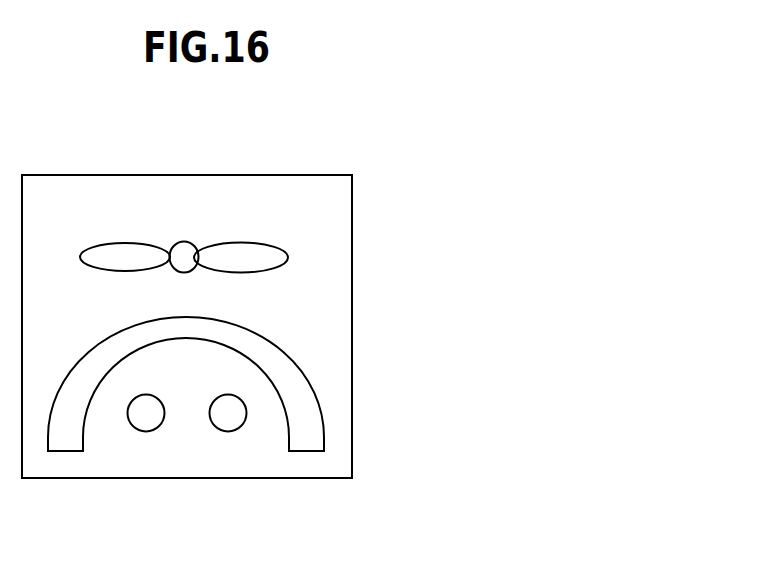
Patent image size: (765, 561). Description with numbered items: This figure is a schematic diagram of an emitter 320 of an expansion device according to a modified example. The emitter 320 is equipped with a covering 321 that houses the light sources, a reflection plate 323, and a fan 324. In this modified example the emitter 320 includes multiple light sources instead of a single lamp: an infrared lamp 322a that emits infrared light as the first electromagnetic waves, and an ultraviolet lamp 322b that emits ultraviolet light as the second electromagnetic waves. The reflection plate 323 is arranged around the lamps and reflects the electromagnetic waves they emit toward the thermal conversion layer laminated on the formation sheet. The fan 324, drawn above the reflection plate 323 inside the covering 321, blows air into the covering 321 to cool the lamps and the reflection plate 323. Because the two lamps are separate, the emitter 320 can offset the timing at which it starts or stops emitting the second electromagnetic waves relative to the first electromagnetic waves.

The emitter 320 is at (350, 152).
The covering 321 is at (352, 195).
The infrared lamp 322a is at (227, 431).
The ultraviolet lamp 322b is at (144, 431).
The reflection plate 323 is at (297, 370).
The fan 324 is at (288, 258).